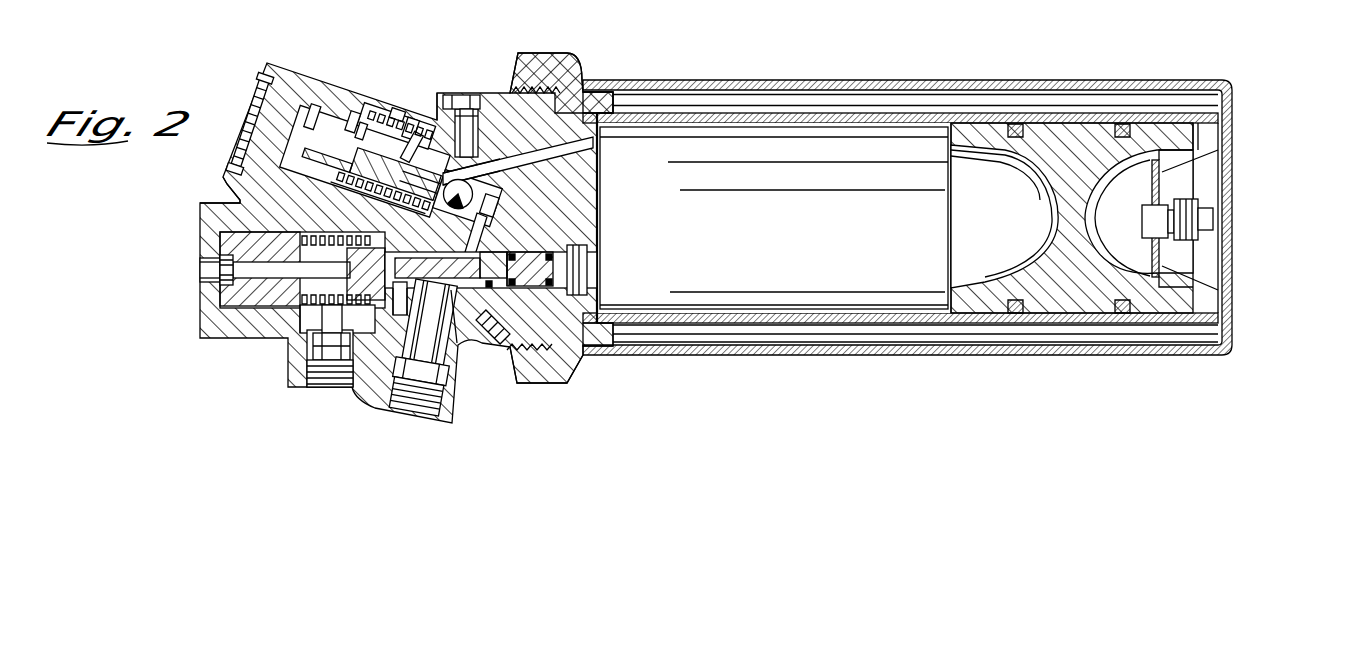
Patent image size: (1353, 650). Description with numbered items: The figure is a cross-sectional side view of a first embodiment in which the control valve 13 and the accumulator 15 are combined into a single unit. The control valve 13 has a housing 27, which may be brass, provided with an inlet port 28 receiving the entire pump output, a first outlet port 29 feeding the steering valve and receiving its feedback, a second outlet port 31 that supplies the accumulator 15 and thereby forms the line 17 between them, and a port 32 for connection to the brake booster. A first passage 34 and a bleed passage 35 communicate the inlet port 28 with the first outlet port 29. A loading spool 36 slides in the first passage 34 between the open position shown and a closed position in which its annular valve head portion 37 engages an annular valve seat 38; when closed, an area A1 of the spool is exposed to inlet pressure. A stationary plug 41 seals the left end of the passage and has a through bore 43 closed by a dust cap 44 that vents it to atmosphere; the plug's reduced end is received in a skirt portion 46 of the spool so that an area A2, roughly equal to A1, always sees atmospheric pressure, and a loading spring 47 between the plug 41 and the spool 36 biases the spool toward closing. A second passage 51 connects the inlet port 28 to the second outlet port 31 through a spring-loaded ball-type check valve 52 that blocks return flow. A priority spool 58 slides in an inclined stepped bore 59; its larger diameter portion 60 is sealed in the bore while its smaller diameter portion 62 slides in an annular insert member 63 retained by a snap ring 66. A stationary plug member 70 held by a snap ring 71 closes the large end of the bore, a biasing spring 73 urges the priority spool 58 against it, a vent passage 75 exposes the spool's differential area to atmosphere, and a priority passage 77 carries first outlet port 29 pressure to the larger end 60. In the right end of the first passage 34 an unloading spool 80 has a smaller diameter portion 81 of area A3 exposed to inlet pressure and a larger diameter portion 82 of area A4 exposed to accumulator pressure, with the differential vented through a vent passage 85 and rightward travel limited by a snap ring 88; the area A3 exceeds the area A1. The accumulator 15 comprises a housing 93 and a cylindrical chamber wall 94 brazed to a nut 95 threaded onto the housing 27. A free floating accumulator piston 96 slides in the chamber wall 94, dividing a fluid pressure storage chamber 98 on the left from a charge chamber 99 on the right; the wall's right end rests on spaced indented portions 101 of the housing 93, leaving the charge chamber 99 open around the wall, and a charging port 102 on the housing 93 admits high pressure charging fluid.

The control valve 13 is at (441, 90).
The accumulator 15 is at (871, 78).
The line 17 is at (597, 152).
The housing 27 is at (497, 92).
The inlet port 28 is at (406, 410).
The first outlet port 29 is at (330, 388).
The second outlet port 31 is at (597, 183).
The port 32 is at (468, 100).
The first passage 34 is at (466, 222).
The bleed passage 35 is at (405, 330).
The loading spool 36 is at (383, 212).
The annular valve head portion 37 is at (385, 195).
The annular valve seat 38 is at (340, 308).
The stationary plug 41 is at (220, 295).
The bore 43 is at (302, 272).
The dust cap 44 is at (220, 272).
The skirt portion 46 is at (310, 304).
The loading spring 47 is at (310, 323).
The second passage 51 is at (497, 220).
The ball-type check valve 52 is at (480, 189).
The priority spool 58 is at (362, 130).
The inclined stepped bore 59 is at (312, 117).
The larger diameter portion 60 is at (369, 151).
The smaller diameter portion 62 is at (471, 170).
The annular insert member 63 is at (415, 155).
The snap ring 66 is at (398, 112).
The stationary plug member 70 is at (262, 86).
The snap ring 71 is at (240, 158).
The biasing spring 73 is at (353, 120).
The vent passage 75 is at (412, 125).
The priority passage 77 is at (242, 201).
The unloading spool 80 is at (597, 265).
The smaller diameter portion 81 is at (490, 292).
The larger diameter portion 82 is at (540, 295).
The vent passage 85 is at (481, 347).
The snap ring 88 is at (597, 285).
The housing 93 is at (962, 80).
The cylindrical chamber wall 94 is at (981, 115).
The nut 95 is at (571, 57).
The free floating accumulator piston 96 is at (1083, 140).
The fluid pressure storage chamber 98 is at (838, 224).
The charge chamber 99 is at (1133, 236).
The indented portions 101 is at (1220, 134).
The charging port 102 is at (1214, 217).
The lateral cross-sectional area A1 is at (443, 238).
The area A2 is at (298, 259).
The lateral cross-sectional area A3 is at (518, 250).
The lateral cross-sectional area A4 is at (597, 250).